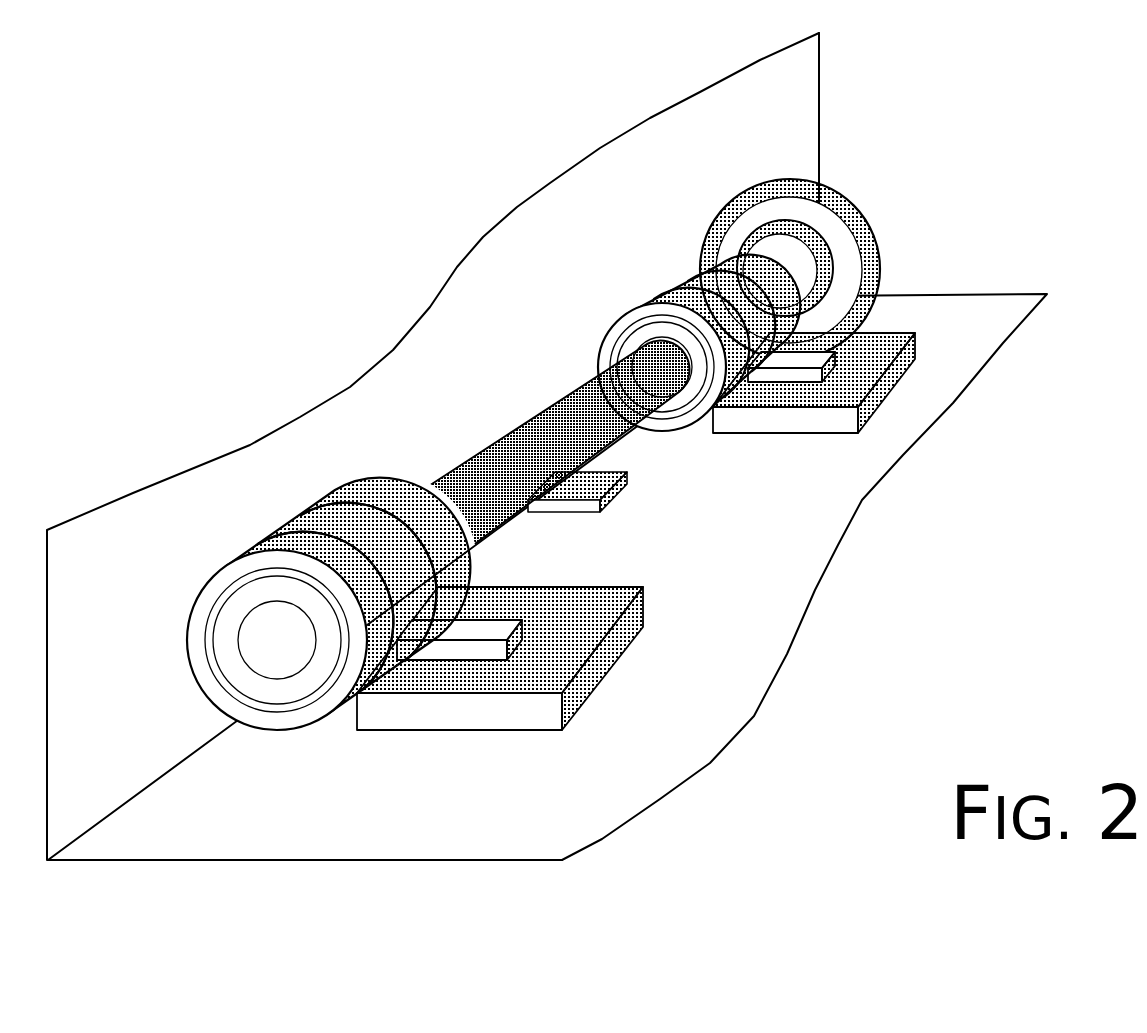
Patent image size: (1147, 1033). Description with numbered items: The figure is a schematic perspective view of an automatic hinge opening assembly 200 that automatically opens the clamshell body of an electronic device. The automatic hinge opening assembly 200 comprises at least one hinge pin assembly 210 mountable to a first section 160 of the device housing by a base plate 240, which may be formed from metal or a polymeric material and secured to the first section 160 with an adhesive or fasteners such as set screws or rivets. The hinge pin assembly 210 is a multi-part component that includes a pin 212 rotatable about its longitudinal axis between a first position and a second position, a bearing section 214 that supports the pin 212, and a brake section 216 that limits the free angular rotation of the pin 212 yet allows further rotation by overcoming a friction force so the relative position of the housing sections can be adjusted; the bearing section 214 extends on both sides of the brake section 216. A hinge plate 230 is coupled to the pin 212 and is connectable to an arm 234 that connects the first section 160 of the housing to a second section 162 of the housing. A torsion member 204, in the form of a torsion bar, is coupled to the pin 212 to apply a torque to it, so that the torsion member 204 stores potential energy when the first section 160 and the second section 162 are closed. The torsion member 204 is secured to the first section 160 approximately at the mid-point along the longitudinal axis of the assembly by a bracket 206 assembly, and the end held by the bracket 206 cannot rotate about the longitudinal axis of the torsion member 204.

The first section of the housing 160 is at (997, 325).
The second section of the housing 162 is at (807, 130).
The automatic hinge opening assembly 200 is at (466, 325).
The torsion member 204 is at (607, 395).
The bracket 206 is at (590, 502).
The hinge pin assembly 210 is at (594, 174).
The pin 212 is at (691, 400).
The bearing section 214 is at (493, 491).
The brake section 216 is at (707, 287).
The hinge plate 230 is at (753, 247).
The arm 234 is at (780, 188).
The base plate 240 is at (883, 380).